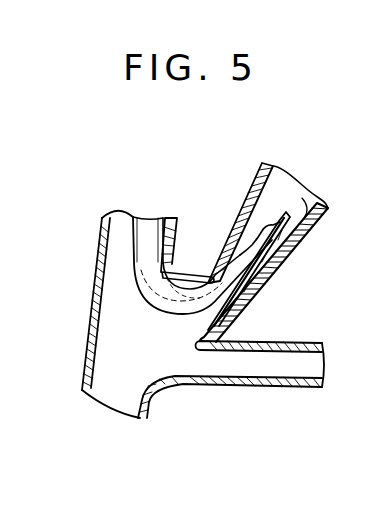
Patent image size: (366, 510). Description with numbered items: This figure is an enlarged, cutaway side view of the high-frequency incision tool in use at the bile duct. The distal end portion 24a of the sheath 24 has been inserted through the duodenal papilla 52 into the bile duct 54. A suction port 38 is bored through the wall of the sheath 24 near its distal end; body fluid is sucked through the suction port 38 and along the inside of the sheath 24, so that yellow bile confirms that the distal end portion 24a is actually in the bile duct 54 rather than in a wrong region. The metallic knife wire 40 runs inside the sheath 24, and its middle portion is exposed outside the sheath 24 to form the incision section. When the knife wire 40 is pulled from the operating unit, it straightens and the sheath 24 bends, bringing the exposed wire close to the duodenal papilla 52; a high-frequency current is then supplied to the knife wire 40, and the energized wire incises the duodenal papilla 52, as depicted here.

The sheath 24 is at (130, 280).
The distal end portion of sheath 24a is at (255, 268).
The suction port 38 is at (248, 230).
The knife wire 40 is at (192, 272).
The duodenal papilla 52 is at (165, 305).
The bile duct 54 is at (326, 212).